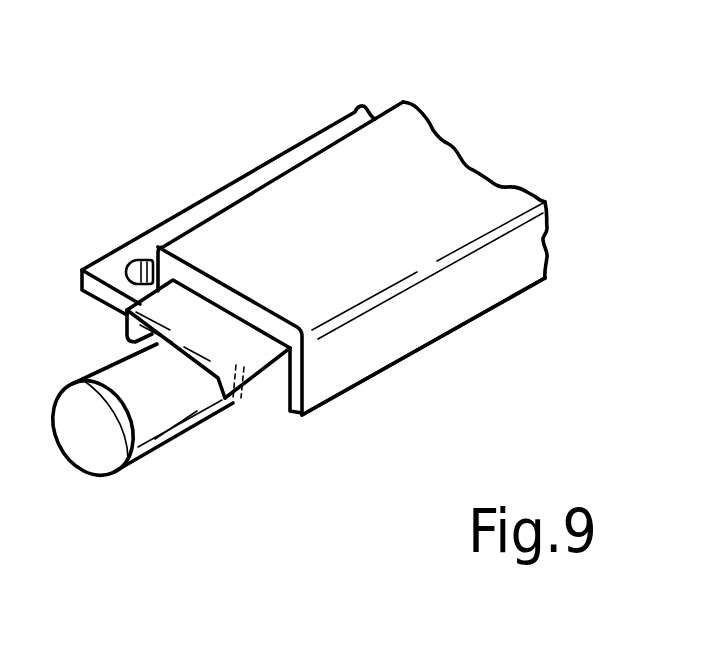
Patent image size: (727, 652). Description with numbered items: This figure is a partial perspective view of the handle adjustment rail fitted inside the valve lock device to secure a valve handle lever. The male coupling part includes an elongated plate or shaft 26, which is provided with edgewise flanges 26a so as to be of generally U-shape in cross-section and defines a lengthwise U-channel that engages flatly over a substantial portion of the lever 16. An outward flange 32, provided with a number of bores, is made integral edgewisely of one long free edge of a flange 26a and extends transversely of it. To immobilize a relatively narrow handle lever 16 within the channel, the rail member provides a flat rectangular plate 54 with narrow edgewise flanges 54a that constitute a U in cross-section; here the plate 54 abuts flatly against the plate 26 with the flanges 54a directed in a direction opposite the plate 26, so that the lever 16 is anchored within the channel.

The lever arm 16 is at (90, 455).
The elongated plate or shaft 26 is at (376, 233).
The edgewise flanges 26a is at (483, 285).
The outward flange 32 is at (132, 257).
The flat rectangular plate 54 is at (208, 328).
The narrow edgewise flanges 54a is at (252, 387).